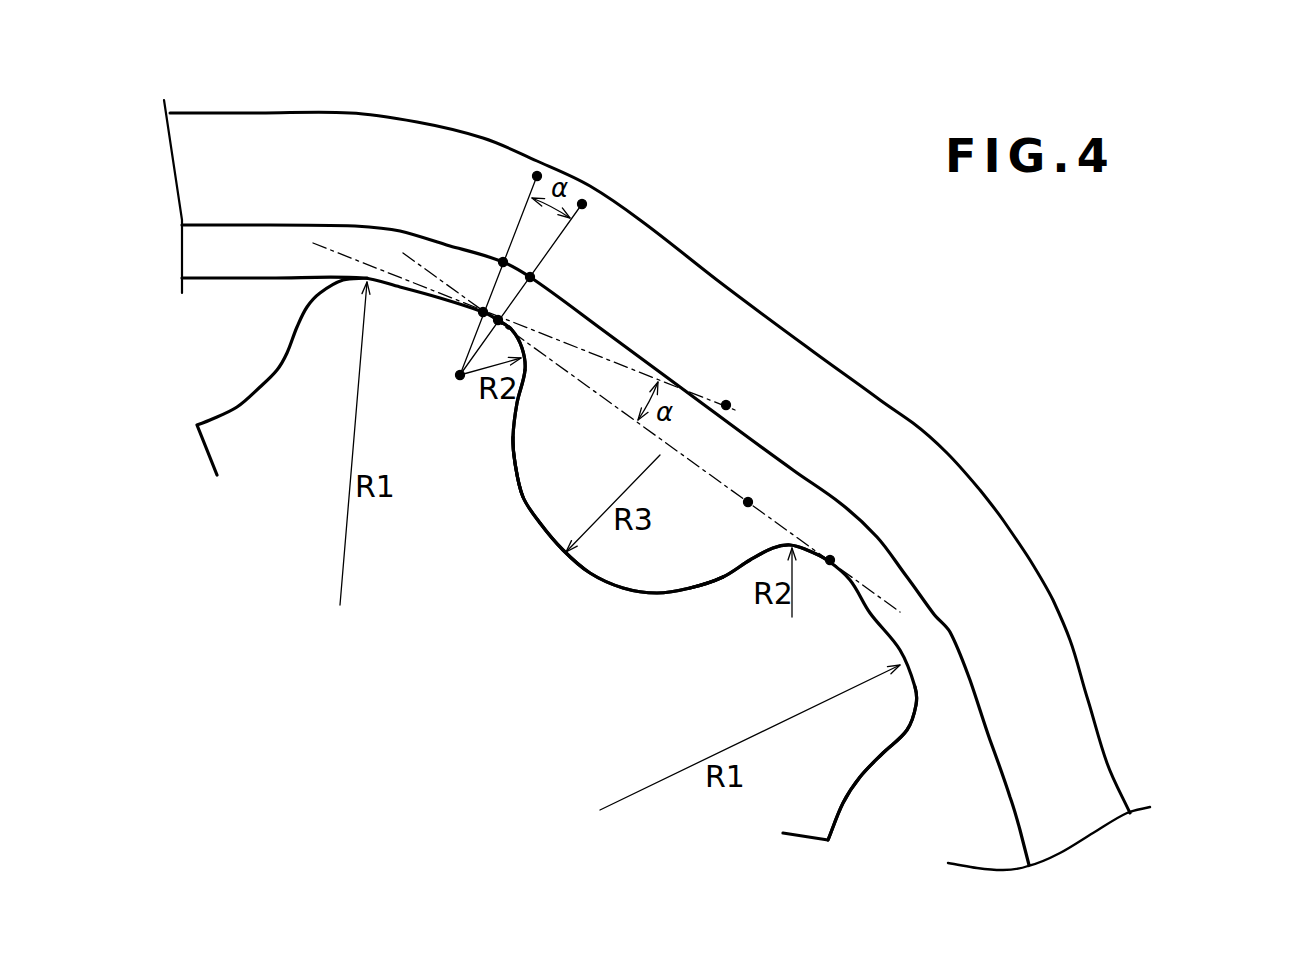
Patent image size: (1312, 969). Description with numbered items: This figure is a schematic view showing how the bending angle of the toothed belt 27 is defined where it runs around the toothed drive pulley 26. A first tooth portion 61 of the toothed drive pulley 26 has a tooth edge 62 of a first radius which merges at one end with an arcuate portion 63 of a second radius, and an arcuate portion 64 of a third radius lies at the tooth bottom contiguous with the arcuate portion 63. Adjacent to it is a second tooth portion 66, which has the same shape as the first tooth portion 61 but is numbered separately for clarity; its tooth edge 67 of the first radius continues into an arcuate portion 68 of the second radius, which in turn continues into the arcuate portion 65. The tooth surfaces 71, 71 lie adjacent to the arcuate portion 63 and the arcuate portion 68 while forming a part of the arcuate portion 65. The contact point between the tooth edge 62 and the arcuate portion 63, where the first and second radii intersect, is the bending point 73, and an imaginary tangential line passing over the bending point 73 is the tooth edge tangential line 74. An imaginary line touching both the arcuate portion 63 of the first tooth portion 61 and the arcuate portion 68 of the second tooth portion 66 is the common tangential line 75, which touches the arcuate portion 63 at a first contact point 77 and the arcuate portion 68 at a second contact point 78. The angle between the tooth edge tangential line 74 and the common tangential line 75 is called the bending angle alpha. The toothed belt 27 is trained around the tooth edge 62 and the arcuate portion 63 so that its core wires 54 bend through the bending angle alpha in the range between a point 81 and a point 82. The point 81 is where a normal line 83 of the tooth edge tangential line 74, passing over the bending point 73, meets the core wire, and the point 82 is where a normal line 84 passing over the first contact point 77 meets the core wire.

The toothed drive pulley 26 is at (492, 650).
The toothed belt 27 is at (1121, 778).
The core wires 54 is at (238, 222).
The first tooth portion 61 is at (270, 366).
The tooth edge 62 is at (398, 273).
The arcuate portion 63 is at (527, 373).
The arcuate portion 64 is at (614, 578).
The arcuate portion 65 is at (542, 510).
The second tooth portion 66 is at (860, 789).
The tooth edge 67 is at (903, 650).
The arcuate portion 68 is at (777, 542).
The tooth surface 71 is at (523, 461).
The bending point 73 is at (483, 312).
The tooth edge tangential line 74 is at (726, 405).
The common tangential line 75 is at (748, 502).
The first contact point 77 is at (498, 320).
The second contact point 78 is at (830, 560).
The point 81 is at (503, 262).
The point 82 is at (530, 277).
The normal line 83 is at (537, 176).
The normal line 84 is at (582, 204).